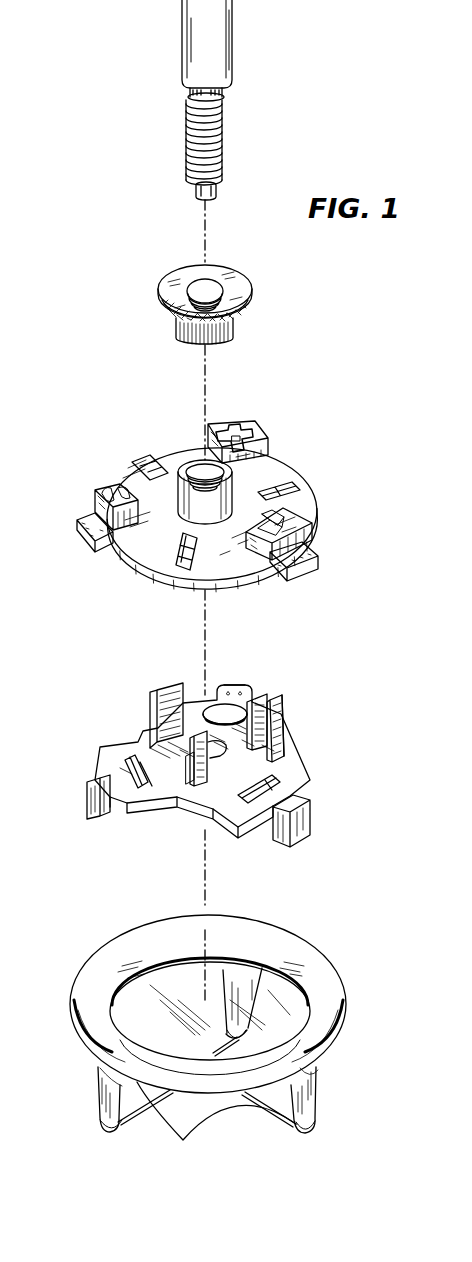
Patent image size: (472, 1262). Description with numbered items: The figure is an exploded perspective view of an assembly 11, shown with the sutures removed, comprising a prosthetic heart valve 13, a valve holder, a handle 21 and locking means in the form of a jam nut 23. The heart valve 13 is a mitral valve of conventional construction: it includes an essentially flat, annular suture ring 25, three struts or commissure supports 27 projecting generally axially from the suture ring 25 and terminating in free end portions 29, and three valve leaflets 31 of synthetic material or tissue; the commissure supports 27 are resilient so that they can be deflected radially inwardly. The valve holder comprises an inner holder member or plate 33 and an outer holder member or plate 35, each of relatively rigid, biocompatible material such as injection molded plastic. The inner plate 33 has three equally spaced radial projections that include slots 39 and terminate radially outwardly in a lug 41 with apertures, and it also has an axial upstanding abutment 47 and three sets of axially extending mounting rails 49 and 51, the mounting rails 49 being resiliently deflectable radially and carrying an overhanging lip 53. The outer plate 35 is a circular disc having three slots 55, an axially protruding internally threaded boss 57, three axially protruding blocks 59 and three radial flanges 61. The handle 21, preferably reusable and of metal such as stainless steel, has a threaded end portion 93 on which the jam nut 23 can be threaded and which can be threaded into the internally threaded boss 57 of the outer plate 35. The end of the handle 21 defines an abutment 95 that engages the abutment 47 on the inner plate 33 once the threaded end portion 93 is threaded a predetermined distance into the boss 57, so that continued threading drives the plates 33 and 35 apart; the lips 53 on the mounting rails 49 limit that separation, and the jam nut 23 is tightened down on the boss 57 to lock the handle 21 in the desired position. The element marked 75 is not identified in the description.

The assembly 11 is at (121, 379).
The prosthetic heart valve 13 is at (294, 929).
The handle 21 is at (194, 46).
The jam nut 23 is at (178, 272).
The suture ring 25 is at (106, 960).
The commissure supports 27 is at (250, 975).
The free end portions 29 is at (227, 1033).
The valve leaflets 31 is at (172, 1003).
The inner holder member or plate 33 is at (287, 777).
The outer holder member or plate 35 is at (272, 460).
The slots 39 is at (133, 755).
The lug 41 is at (227, 687).
The abutment 47 is at (216, 752).
The mounting rails 49 is at (276, 698).
The mounting rails 51 is at (263, 698).
The overhanging lip 53 is at (284, 716).
The slots 55 is at (140, 463).
The internally threaded boss 57 is at (194, 460).
The blocks 59 is at (102, 488).
The radial flanges 61 is at (78, 522).
The clip tab 75 is at (238, 430).
The threaded end portion 93 is at (186, 140).
The abutment 95 is at (213, 196).